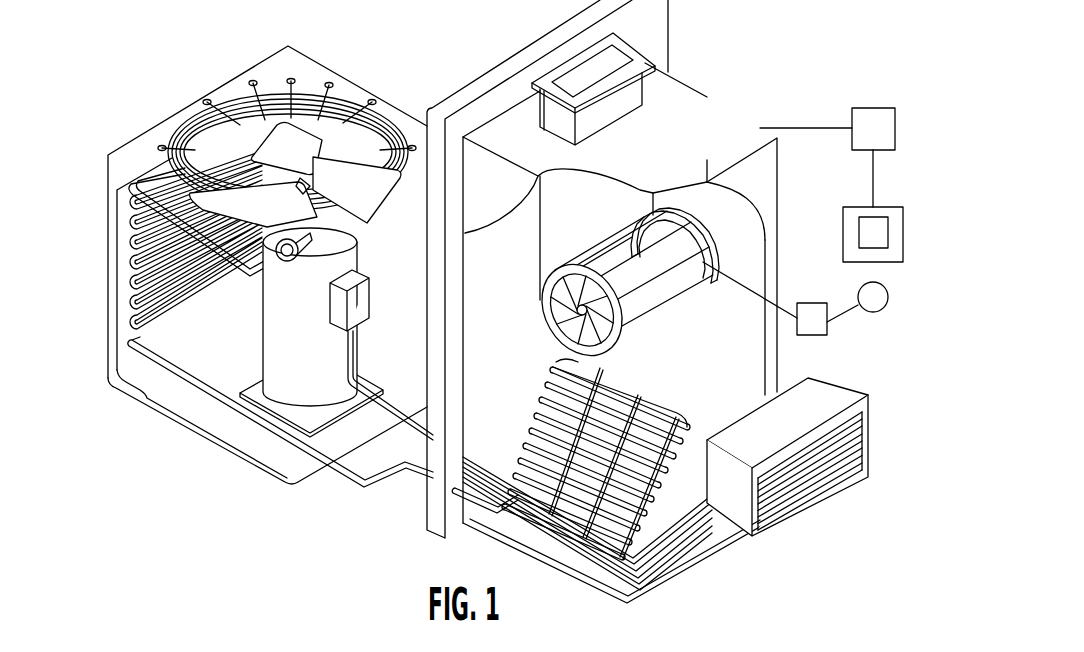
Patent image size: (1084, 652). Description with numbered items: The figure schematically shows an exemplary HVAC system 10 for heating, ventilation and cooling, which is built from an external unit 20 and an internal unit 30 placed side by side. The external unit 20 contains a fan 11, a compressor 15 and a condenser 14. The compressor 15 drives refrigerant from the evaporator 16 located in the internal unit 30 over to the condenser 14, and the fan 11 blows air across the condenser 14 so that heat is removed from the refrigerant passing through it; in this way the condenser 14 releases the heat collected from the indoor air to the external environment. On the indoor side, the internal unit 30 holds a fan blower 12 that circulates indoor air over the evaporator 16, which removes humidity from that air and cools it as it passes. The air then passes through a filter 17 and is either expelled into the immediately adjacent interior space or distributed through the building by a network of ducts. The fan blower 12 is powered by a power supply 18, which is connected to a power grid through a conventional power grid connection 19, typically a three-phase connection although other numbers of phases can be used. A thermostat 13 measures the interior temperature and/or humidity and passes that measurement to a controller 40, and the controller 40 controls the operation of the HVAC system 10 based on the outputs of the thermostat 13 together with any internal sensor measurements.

The HVAC system 10 is at (914, 368).
The fan 11 is at (343, 108).
The fan blower 12 is at (588, 263).
The thermostat 13 is at (903, 232).
The condenser 14 is at (178, 295).
The compressor 15 is at (320, 333).
The evaporator 16 is at (560, 413).
The filter 17 is at (822, 398).
The power supply 18 is at (815, 303).
The power grid connection 19 is at (888, 298).
The external unit 20 is at (104, 257).
The internal unit 30 is at (732, 110).
The controller 40 is at (895, 130).